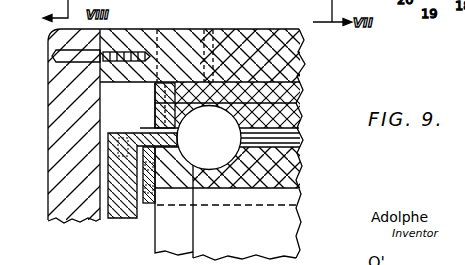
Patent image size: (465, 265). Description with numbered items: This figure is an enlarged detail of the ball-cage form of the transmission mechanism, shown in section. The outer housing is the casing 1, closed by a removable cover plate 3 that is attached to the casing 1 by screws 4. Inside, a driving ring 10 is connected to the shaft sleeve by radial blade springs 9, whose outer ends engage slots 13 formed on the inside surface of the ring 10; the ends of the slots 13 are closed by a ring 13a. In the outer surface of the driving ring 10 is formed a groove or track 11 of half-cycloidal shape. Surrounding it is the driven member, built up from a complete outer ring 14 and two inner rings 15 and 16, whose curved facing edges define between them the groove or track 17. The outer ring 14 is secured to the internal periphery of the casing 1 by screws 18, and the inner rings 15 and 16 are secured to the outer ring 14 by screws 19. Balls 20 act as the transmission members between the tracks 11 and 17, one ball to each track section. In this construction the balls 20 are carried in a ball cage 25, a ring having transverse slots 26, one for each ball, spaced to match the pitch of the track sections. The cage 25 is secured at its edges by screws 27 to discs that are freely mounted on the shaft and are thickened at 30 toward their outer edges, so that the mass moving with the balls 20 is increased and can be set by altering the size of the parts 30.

The casing 1 is at (213, 130).
The cover plate 3 is at (68, 152).
The screws 4 is at (52, 57).
The radial blade springs 9 is at (258, 227).
The ring 10 is at (275, 167).
The groove or track 11 is at (258, 44).
The slots 13 is at (91, 173).
The ring 13a is at (165, 197).
The outer ring 14 is at (298, 56).
The inner ring 15 is at (300, 111).
The inner ring 16 is at (158, 122).
The groove or track 17 is at (280, 178).
The screws 18 is at (206, 29).
The screws 19 is at (156, 29).
The balls 20 is at (301, 73).
The ball cage 25 is at (160, 136).
The transverse slots 26 is at (301, 135).
The screws 27 is at (110, 145).
The thickened portions 30 is at (118, 198).